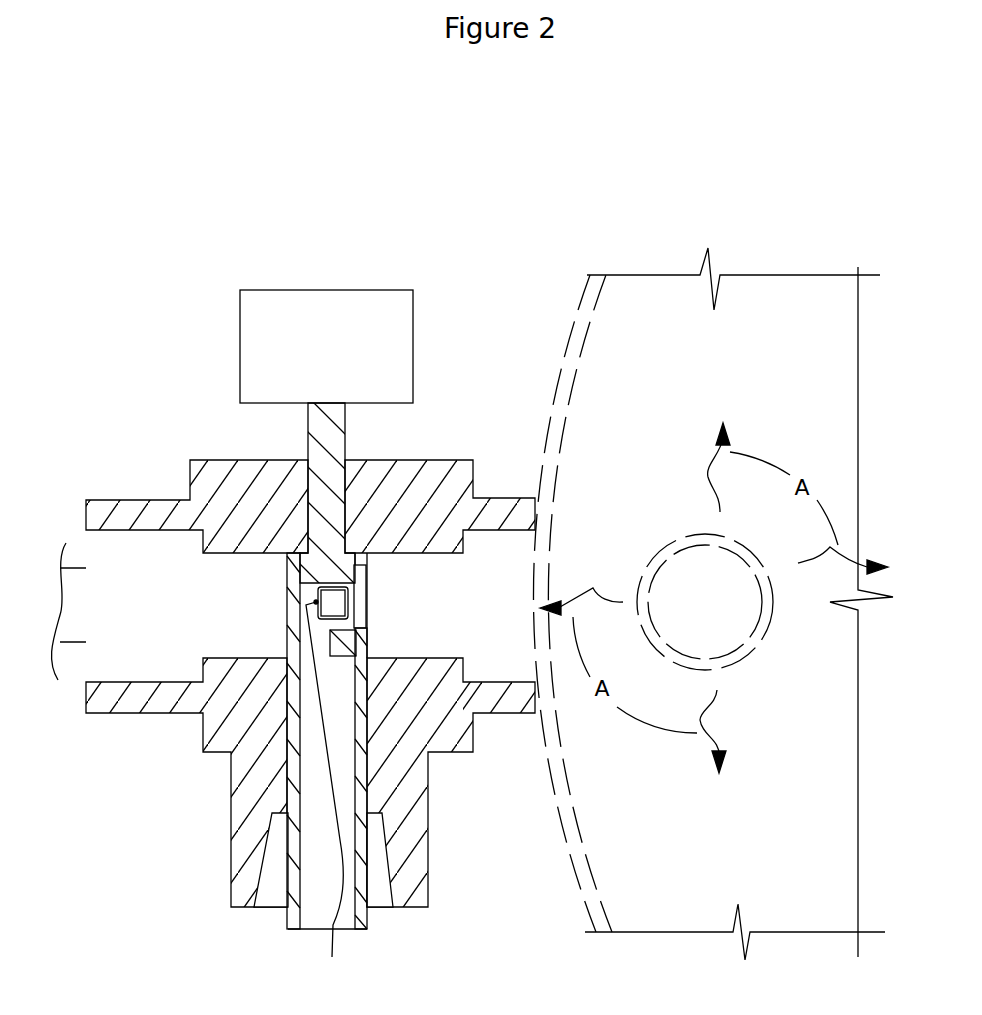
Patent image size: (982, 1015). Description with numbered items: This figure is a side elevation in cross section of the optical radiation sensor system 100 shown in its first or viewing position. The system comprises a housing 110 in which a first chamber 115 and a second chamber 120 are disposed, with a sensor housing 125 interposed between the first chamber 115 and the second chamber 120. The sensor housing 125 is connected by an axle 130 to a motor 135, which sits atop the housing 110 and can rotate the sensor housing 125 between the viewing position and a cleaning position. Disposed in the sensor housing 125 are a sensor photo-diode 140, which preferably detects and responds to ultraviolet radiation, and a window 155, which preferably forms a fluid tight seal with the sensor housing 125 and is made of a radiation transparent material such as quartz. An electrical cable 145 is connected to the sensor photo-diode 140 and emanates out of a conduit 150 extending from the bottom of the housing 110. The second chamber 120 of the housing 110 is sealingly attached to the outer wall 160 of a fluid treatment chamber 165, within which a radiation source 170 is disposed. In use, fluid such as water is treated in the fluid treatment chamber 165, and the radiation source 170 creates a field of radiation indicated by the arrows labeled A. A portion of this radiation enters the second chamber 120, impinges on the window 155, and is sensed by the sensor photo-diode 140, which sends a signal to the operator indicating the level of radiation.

The optical radiation sensor system 100 is at (185, 305).
The housing 110 is at (467, 473).
The first chamber 115 is at (136, 622).
The second chamber 120 is at (465, 620).
The sensor housing 125 is at (297, 578).
The axle 130 is at (313, 423).
The motor 135 is at (338, 356).
The sensor photo-diode 140 is at (335, 607).
The electrical cable 145 is at (333, 907).
The conduit 150 is at (295, 917).
The window 155 is at (360, 590).
The outer wall 160 is at (580, 305).
The fluid treatment chamber 165 is at (787, 225).
The radiation source 170 is at (690, 617).